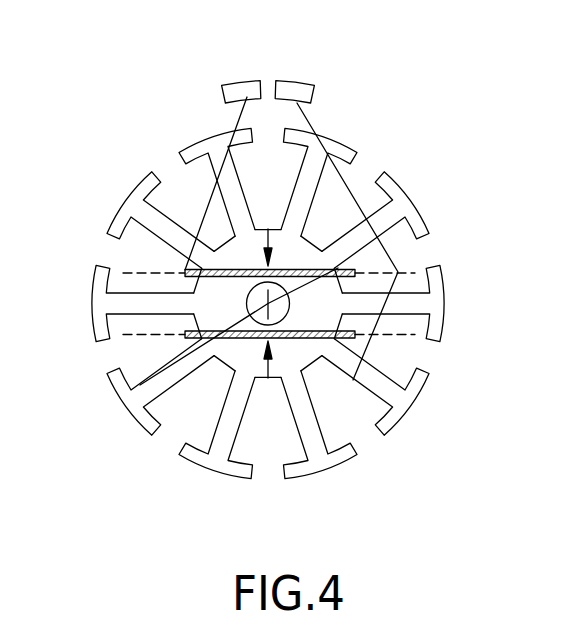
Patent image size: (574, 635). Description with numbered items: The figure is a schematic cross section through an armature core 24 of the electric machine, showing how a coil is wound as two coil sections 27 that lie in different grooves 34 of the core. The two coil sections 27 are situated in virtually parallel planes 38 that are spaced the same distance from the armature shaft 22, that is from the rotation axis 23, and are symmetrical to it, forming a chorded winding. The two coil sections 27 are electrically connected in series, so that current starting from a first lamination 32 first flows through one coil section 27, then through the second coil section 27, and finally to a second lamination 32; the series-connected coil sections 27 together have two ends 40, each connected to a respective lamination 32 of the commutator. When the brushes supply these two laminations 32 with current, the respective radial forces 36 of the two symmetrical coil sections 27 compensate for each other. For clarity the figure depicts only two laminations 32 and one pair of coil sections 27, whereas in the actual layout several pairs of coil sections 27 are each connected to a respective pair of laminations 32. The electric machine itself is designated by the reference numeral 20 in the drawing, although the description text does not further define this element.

The stator core 20 is at (118, 182).
The armature shaft 22 is at (249, 311).
The rotation axis 23 is at (248, 298).
The armature core 24 is at (393, 212).
The coil sections 27 is at (248, 268).
The laminations 32 is at (297, 80).
The grooves 34 is at (363, 176).
The radial forces 36 is at (262, 239).
The parallel planes 38 is at (128, 323).
The ends 40 is at (309, 116).